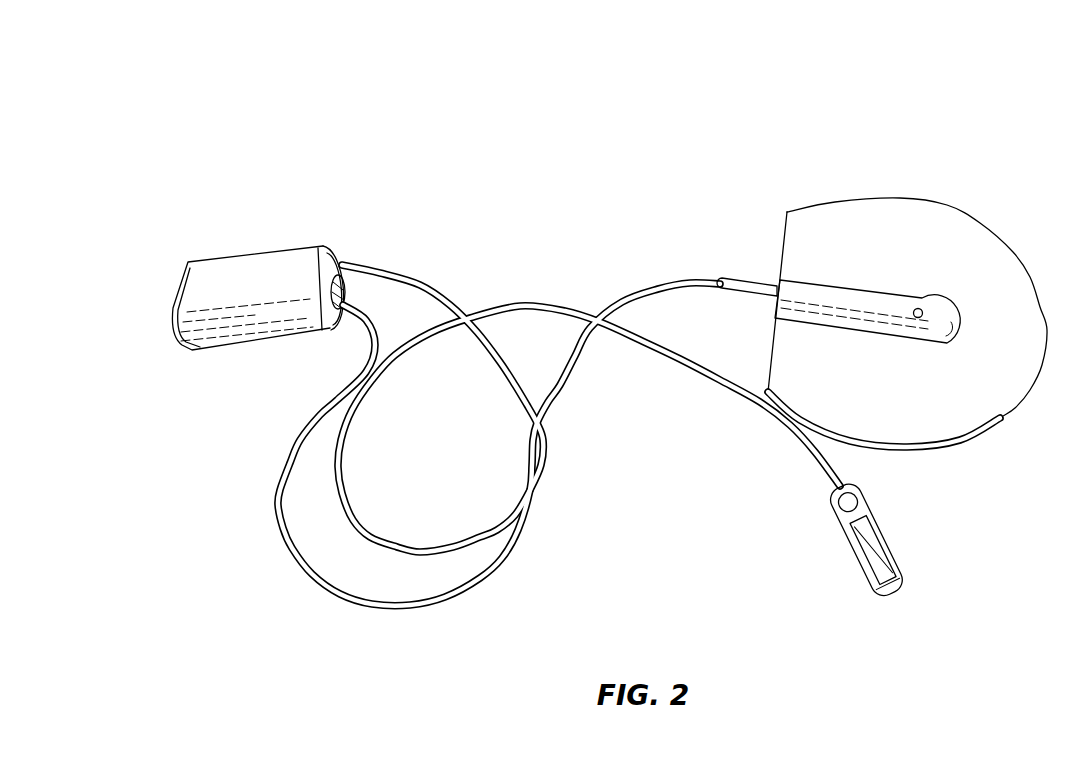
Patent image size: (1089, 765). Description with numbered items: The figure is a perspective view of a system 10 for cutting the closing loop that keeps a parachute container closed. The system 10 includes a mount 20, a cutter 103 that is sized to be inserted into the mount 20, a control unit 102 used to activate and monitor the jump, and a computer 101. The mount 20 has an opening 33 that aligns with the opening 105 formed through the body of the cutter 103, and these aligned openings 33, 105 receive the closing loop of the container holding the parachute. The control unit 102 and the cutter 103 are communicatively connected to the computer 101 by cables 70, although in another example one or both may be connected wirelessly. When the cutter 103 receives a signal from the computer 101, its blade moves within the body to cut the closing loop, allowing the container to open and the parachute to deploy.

The system 10 is at (636, 138).
The mount 20 is at (922, 227).
The opening 33 is at (933, 298).
The cables 70 is at (363, 600).
The computer 101 is at (232, 277).
The control unit 102 is at (892, 594).
The cutter 103 is at (772, 290).
The opening 105 is at (931, 354).